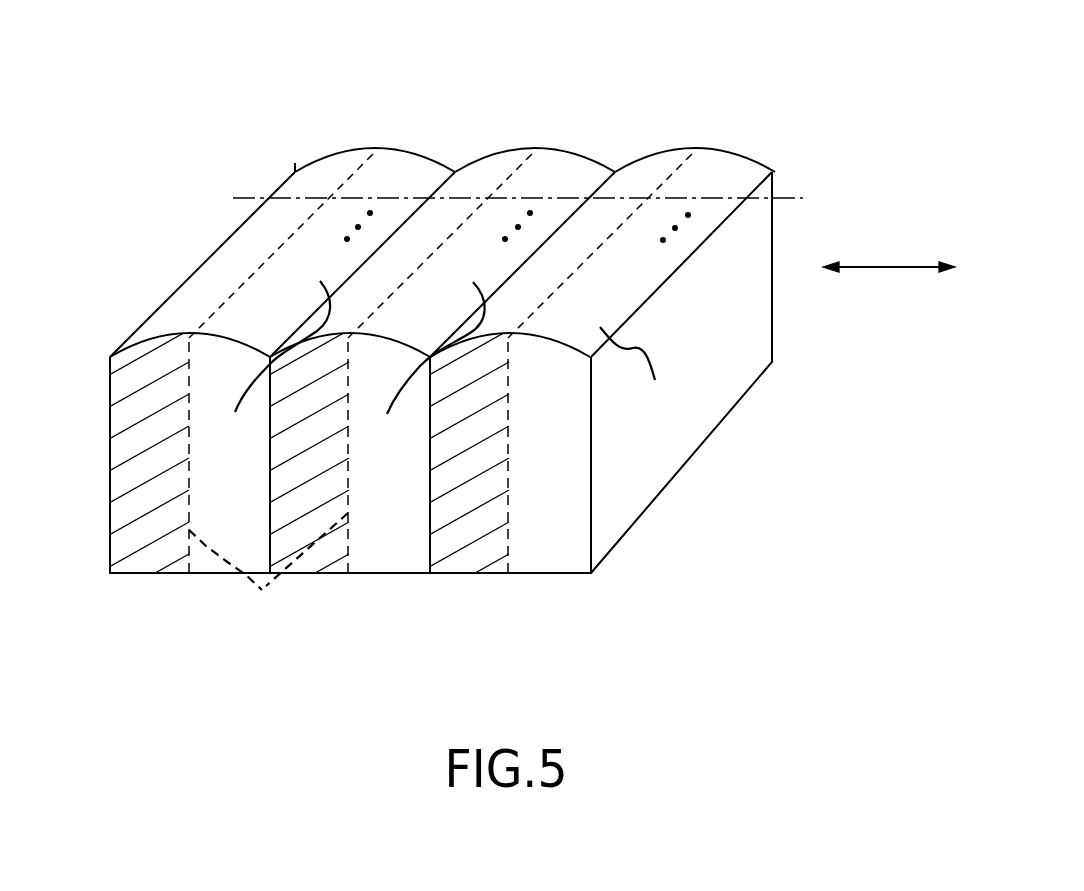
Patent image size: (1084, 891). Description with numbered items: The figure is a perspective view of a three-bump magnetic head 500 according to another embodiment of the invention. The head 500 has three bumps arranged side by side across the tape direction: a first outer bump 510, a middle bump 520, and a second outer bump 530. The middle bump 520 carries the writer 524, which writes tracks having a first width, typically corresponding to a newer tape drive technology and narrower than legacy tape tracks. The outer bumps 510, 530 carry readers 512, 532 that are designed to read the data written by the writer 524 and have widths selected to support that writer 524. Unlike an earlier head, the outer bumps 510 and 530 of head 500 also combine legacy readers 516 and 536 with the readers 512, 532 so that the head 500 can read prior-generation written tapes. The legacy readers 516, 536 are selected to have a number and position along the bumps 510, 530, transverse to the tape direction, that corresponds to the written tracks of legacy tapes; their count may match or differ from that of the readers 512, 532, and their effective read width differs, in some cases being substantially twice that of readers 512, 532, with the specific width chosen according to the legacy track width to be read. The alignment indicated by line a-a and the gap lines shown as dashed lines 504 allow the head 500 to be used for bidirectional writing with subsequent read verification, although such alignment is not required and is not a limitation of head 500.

The head 500 is at (143, 220).
The gap lines 504 is at (268, 563).
The outer bump 510 is at (346, 140).
The readers 512 is at (283, 264).
The legacy readers 516 is at (257, 321).
The middle bump 520 is at (513, 138).
The writer 524 is at (415, 321).
The outer bump 530 is at (669, 138).
The readers 532 is at (578, 285).
The legacy readers 536 is at (637, 290).